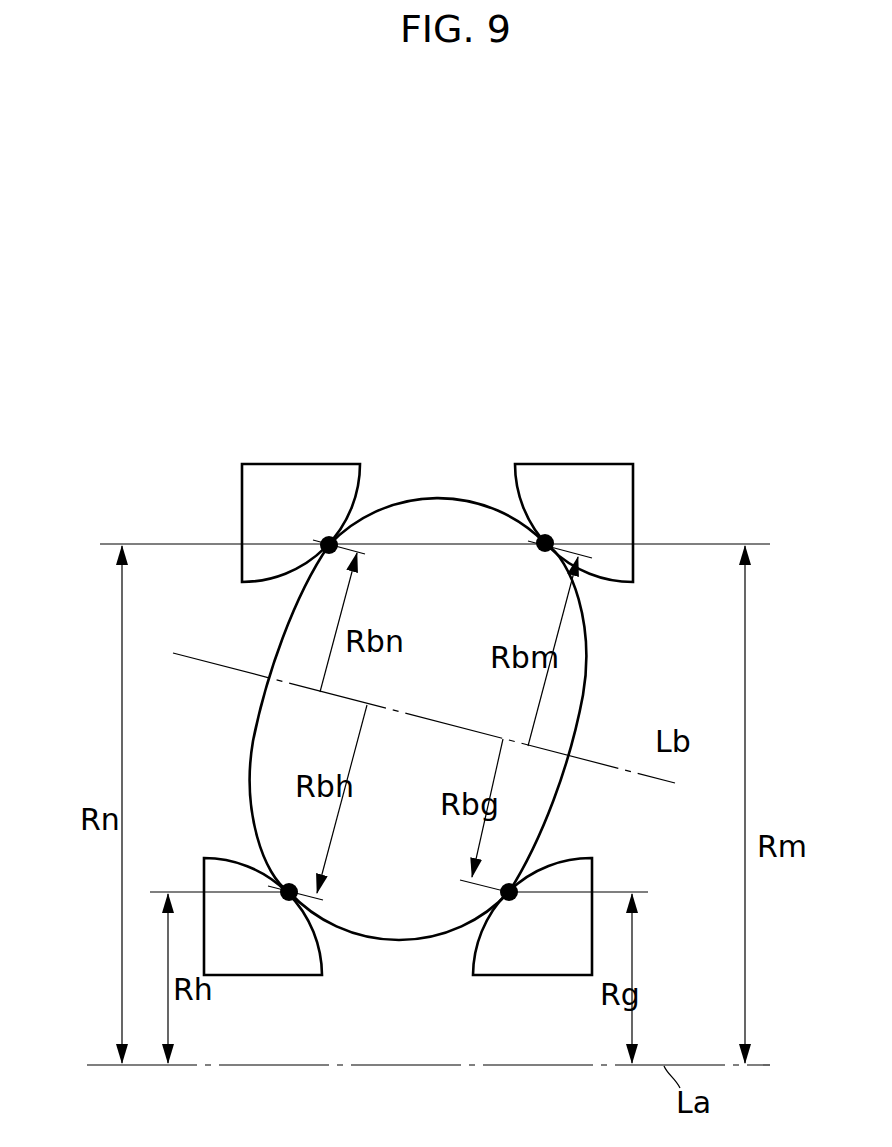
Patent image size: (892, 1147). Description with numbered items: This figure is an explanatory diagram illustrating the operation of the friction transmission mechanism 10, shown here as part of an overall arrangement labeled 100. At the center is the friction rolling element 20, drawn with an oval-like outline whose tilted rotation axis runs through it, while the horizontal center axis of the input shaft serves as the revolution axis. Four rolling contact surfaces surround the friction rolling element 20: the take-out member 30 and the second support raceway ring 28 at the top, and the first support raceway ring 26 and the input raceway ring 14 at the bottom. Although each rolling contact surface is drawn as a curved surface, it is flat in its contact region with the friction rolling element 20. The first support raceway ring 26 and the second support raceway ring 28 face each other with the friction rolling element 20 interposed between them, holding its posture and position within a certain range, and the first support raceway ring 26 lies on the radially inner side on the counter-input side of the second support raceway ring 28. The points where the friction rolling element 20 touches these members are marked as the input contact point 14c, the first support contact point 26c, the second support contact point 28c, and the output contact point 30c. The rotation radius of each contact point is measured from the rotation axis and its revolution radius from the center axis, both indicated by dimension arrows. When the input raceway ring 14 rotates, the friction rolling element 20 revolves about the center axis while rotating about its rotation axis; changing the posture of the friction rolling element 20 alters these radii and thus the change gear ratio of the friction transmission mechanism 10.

The friction transmission mechanism 10 is at (424, 432).
The drive mechanism 100 is at (745, 348).
The friction rolling element 20 is at (572, 678).
The take-out member 30 is at (252, 470).
The output contact point 30c is at (329, 542).
The second support raceway ring 28 is at (608, 470).
The second support contact point 28c is at (545, 540).
The first support raceway ring 26 is at (218, 878).
The first support contact point 26c is at (288, 898).
The input raceway ring 14 is at (580, 864).
The input contact point 14c is at (509, 898).